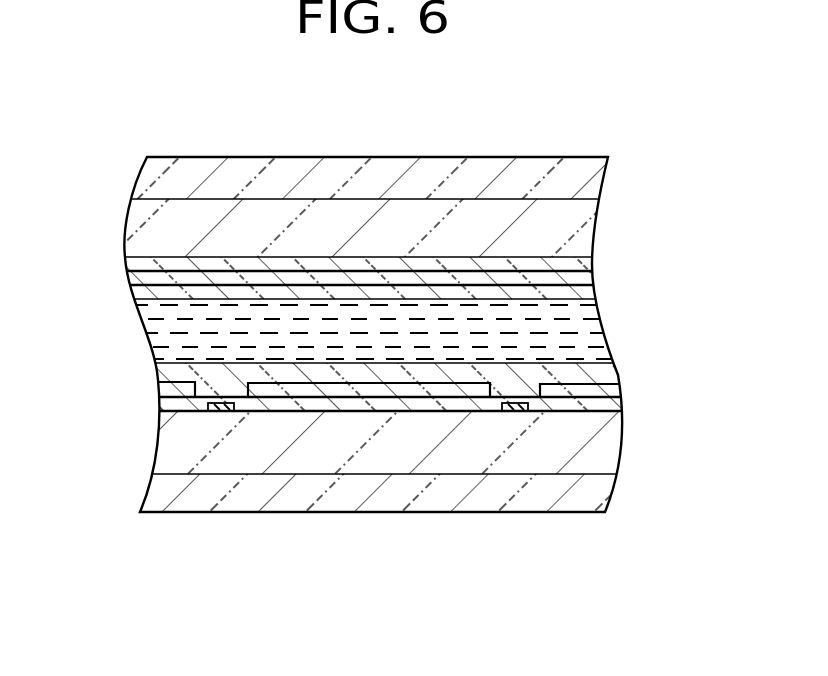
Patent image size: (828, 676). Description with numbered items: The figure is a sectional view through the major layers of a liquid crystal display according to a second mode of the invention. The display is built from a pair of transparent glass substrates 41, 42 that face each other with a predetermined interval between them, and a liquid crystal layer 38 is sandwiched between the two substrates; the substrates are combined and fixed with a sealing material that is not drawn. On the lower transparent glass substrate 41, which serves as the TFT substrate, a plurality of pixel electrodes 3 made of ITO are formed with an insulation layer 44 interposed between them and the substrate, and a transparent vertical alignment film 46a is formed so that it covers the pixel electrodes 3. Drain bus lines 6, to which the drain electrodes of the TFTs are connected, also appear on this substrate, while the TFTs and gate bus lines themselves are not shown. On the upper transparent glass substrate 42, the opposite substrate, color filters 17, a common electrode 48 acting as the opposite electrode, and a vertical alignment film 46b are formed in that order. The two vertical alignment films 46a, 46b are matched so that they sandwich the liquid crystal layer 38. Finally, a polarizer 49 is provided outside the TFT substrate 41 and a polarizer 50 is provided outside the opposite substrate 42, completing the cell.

The polarizer 50 is at (567, 184).
The transparent glass substrate 42 is at (567, 230).
The color filters 17 is at (146, 265).
The common electrode 48 is at (592, 279).
The vertical alignment film 46b is at (580, 296).
The liquid crystal layer 38 is at (577, 338).
The transparent vertical alignment film 46a is at (620, 376).
The pixel electrodes 3 is at (610, 389).
The insulation layer 44 is at (403, 407).
The drain bus lines 6 is at (218, 408).
The transparent glass substrate 41 is at (593, 440).
The polarizer 49 is at (590, 503).